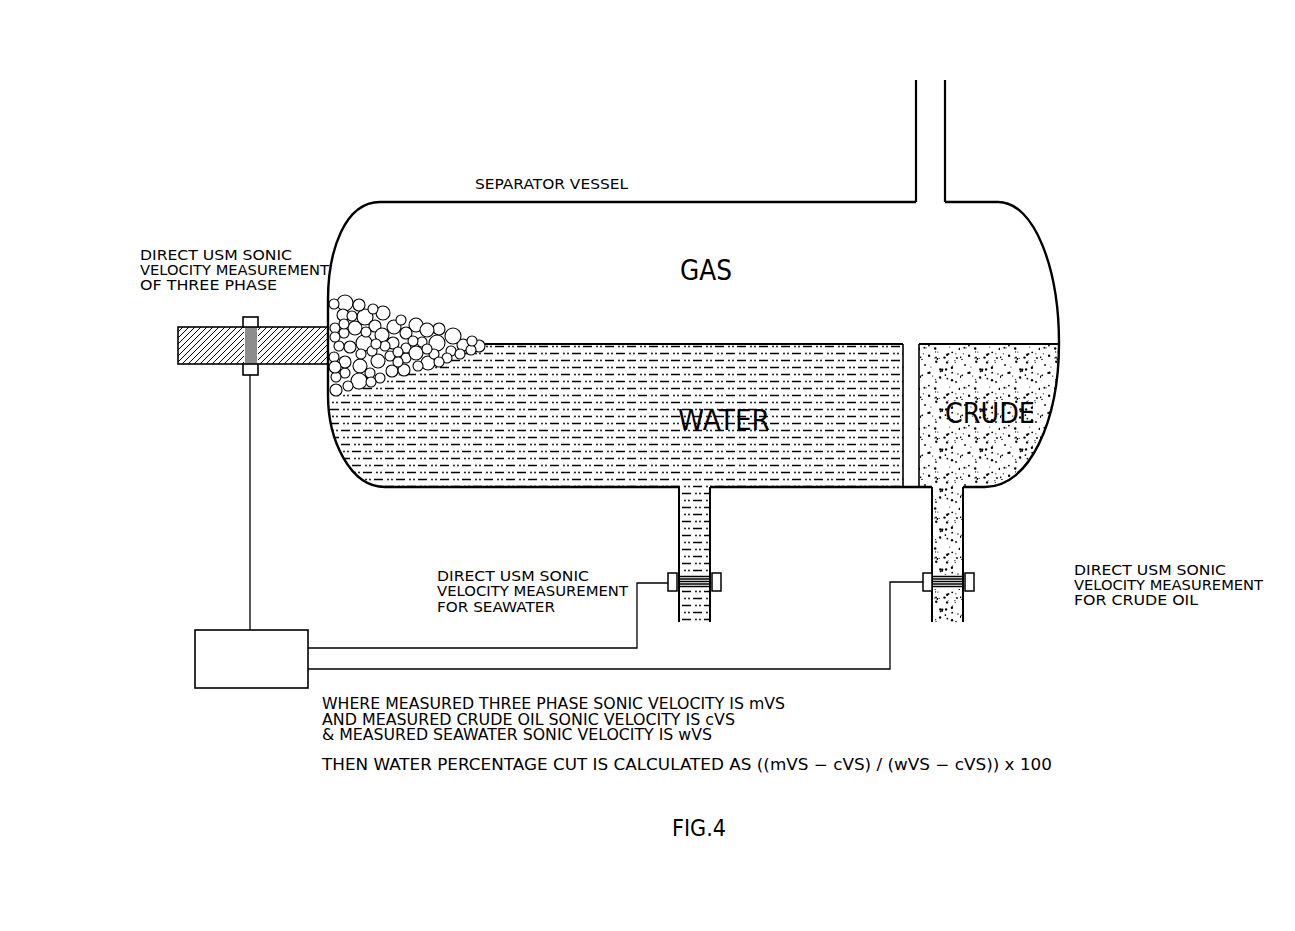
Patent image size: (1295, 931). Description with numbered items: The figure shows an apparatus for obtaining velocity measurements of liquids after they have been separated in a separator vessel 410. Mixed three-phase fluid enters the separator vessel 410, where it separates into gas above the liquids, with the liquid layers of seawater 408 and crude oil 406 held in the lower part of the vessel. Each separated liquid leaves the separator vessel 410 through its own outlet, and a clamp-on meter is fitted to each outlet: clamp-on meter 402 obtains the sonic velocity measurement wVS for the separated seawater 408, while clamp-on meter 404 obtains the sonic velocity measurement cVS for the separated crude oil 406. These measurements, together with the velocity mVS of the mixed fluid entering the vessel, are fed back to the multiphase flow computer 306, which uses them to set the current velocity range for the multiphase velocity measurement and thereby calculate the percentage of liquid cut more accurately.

The multiphase flow computer 306 is at (287, 638).
The clamp-on meter 402 is at (721, 584).
The clamp-on meter 404 is at (974, 584).
The crude oil 406 is at (1058, 398).
The seawater 408 is at (526, 473).
The separator vessel 410 is at (1058, 283).